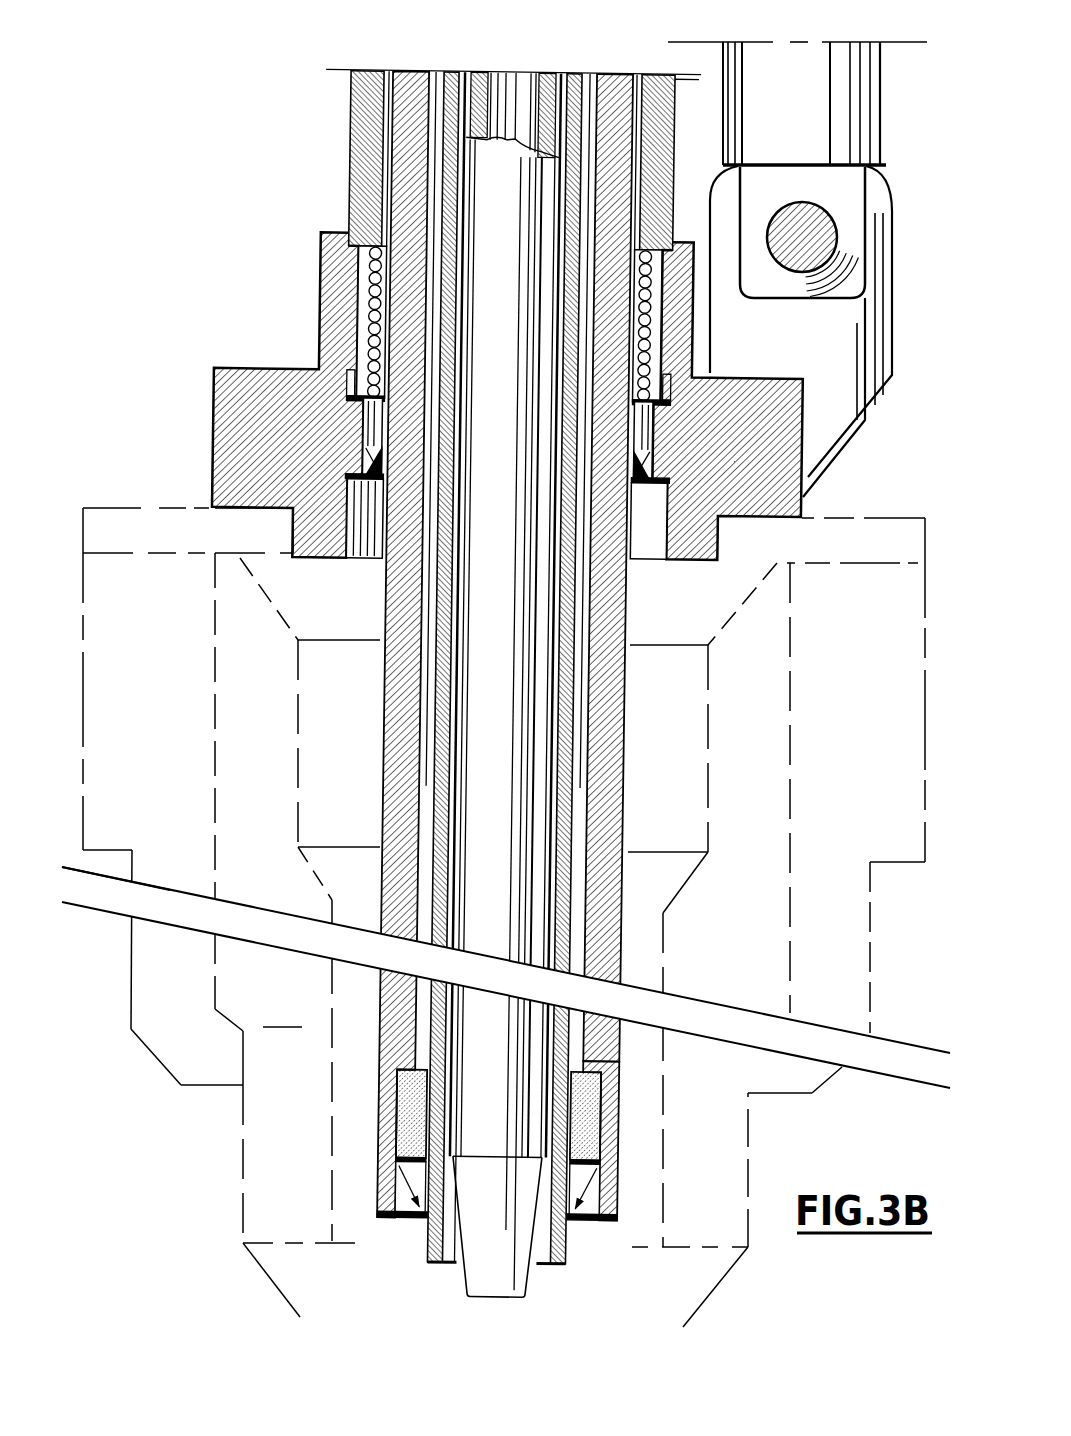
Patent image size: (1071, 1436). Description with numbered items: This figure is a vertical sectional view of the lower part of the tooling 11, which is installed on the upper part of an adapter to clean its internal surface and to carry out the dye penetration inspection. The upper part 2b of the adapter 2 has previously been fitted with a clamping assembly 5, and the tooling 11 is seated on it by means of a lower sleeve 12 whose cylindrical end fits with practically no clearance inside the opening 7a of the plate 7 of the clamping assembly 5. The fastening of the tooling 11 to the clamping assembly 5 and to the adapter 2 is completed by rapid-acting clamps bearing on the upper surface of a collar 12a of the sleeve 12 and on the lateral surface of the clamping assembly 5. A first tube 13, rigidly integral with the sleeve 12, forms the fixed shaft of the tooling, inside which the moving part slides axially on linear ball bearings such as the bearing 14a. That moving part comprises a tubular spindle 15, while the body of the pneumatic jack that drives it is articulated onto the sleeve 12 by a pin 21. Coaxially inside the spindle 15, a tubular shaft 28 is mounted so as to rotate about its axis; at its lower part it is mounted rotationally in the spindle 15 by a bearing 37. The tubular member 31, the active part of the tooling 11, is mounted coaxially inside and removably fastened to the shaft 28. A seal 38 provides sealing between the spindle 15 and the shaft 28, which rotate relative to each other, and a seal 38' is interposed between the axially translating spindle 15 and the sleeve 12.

The adapter 2 is at (300, 1277).
The upper part of the adapter 2b is at (282, 1012).
The clamping assembly 5 is at (143, 1098).
The plate 7 is at (168, 528).
The opening 7a is at (290, 542).
The tooling 11 is at (637, 703).
The lower sleeve 12 is at (307, 317).
The collar 12a is at (252, 387).
The first tube 13 is at (367, 125).
The linear ball bearing 14a is at (697, 372).
The tubular spindle 15 is at (415, 213).
The pin 21 is at (807, 235).
The tubular shaft 28 is at (563, 920).
The tubular member 31 is at (498, 1265).
The bearing 37 is at (580, 1143).
The seal 38 is at (512, 1187).
The seal 38' is at (660, 546).